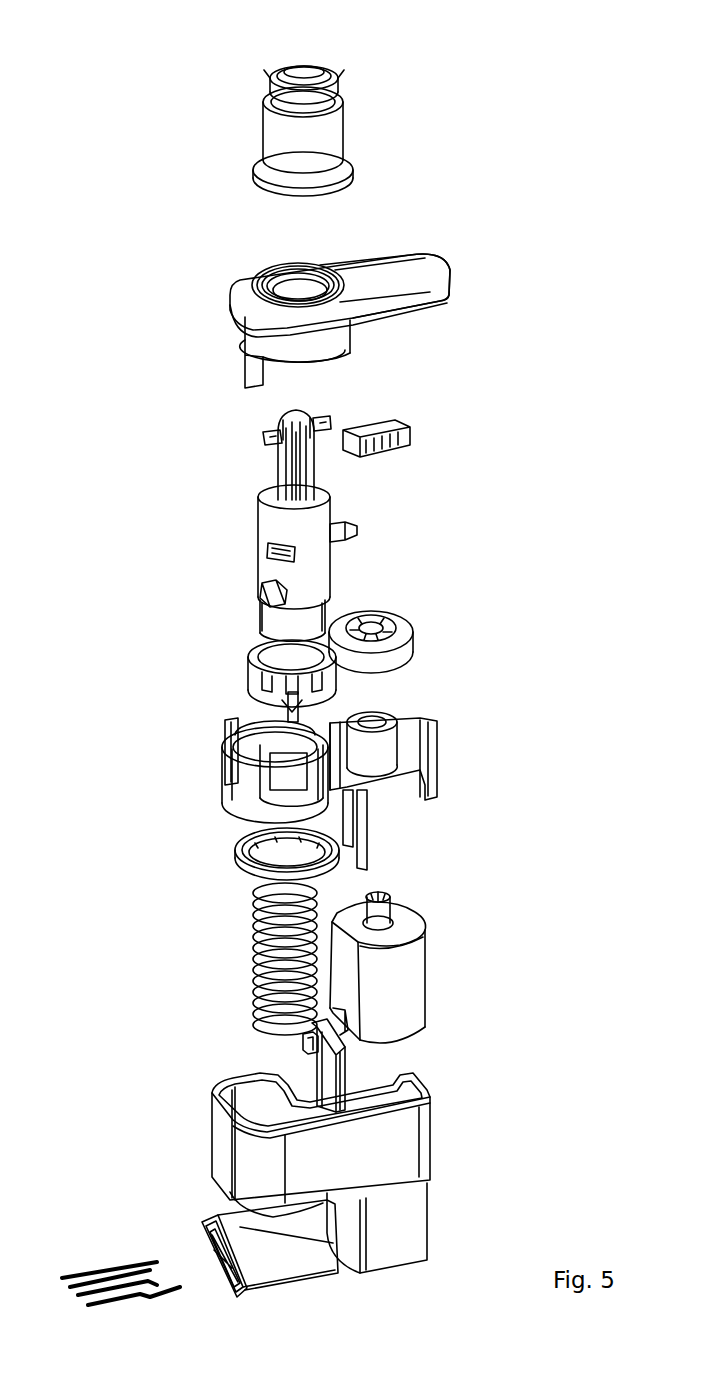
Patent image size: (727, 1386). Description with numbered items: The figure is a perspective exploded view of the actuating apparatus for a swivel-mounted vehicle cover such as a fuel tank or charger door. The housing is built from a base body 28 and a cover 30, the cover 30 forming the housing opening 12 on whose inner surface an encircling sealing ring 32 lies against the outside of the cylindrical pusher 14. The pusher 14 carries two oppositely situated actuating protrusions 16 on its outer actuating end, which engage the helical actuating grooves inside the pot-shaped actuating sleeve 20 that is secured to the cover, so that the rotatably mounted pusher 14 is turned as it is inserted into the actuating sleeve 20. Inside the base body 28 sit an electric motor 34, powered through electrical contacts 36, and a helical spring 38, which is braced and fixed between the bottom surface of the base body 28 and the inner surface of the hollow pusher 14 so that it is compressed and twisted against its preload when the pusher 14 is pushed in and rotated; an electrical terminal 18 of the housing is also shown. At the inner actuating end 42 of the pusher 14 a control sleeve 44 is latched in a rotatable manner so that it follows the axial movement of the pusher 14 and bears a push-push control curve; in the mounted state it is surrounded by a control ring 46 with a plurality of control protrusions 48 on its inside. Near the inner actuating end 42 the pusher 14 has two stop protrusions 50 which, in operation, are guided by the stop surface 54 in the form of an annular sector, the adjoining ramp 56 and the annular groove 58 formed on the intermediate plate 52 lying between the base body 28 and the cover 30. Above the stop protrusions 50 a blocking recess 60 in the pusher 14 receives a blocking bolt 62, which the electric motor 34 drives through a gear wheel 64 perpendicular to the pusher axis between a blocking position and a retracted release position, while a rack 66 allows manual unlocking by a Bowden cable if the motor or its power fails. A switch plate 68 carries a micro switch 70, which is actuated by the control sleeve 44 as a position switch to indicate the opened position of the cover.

The housing opening 12 is at (336, 293).
The pusher 14 is at (312, 509).
The actuating protrusions 16 is at (263, 440).
The electrical terminal 18 is at (200, 1238).
The actuating sleeve 20 is at (335, 127).
The base body 28 is at (315, 1185).
The cover 30 is at (405, 270).
The sealing ring 32 is at (275, 275).
The electric motor 34 is at (418, 978).
The electrical contacts 36 is at (100, 1268).
The helical spring 38 is at (258, 925).
The inner actuating end 42 is at (270, 618).
The control sleeve 44 is at (268, 695).
The control ring 46 is at (246, 845).
The control protrusions 48 is at (250, 845).
The stop protrusions 50 is at (266, 600).
The intermediate plate 52 is at (295, 777).
The stop surface 54 is at (266, 745).
The ramp 56 is at (245, 765).
The annular groove 58 is at (292, 781).
The blocking recess 60 is at (268, 552).
The blocking bolt 62 is at (358, 532).
The gear wheel 64 is at (402, 650).
The rack 66 is at (408, 435).
The switch plate 68 is at (340, 1068).
The micro switch 70 is at (303, 1045).